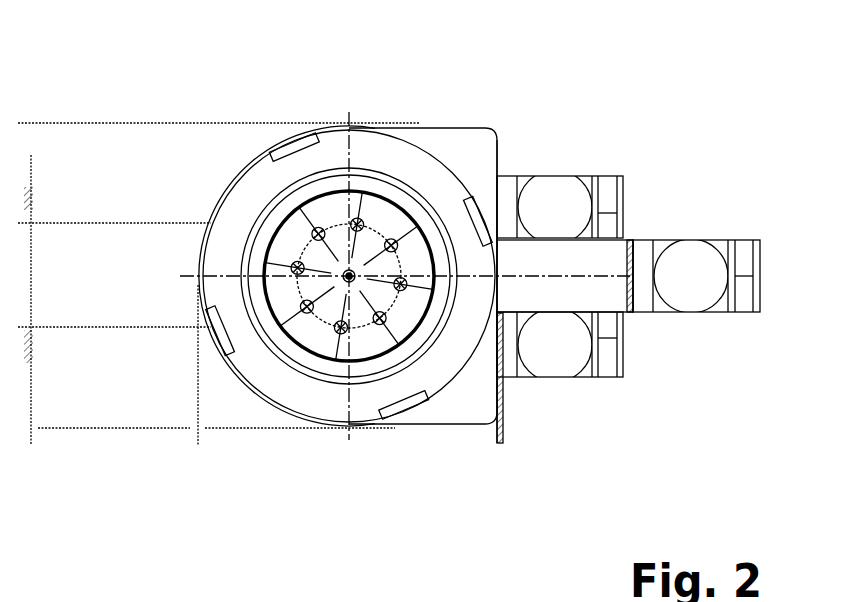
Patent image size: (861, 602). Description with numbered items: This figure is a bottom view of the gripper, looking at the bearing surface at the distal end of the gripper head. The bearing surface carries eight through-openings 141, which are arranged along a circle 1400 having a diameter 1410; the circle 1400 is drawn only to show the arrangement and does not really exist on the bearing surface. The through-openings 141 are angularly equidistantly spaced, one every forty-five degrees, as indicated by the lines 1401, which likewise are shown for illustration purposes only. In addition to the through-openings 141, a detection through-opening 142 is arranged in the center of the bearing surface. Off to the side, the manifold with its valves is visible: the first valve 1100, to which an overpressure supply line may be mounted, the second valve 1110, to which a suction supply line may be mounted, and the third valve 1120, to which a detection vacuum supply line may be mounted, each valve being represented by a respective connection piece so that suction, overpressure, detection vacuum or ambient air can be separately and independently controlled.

The circle 1400 is at (318, 233).
The lines 1401 is at (403, 242).
The detection through-opening 142 is at (348, 265).
The through-openings 141 is at (341, 333).
The diameter 1410 is at (28, 290).
The second valve 1110 is at (567, 205).
The first valve 1100 is at (568, 353).
The third valve 1120 is at (690, 277).